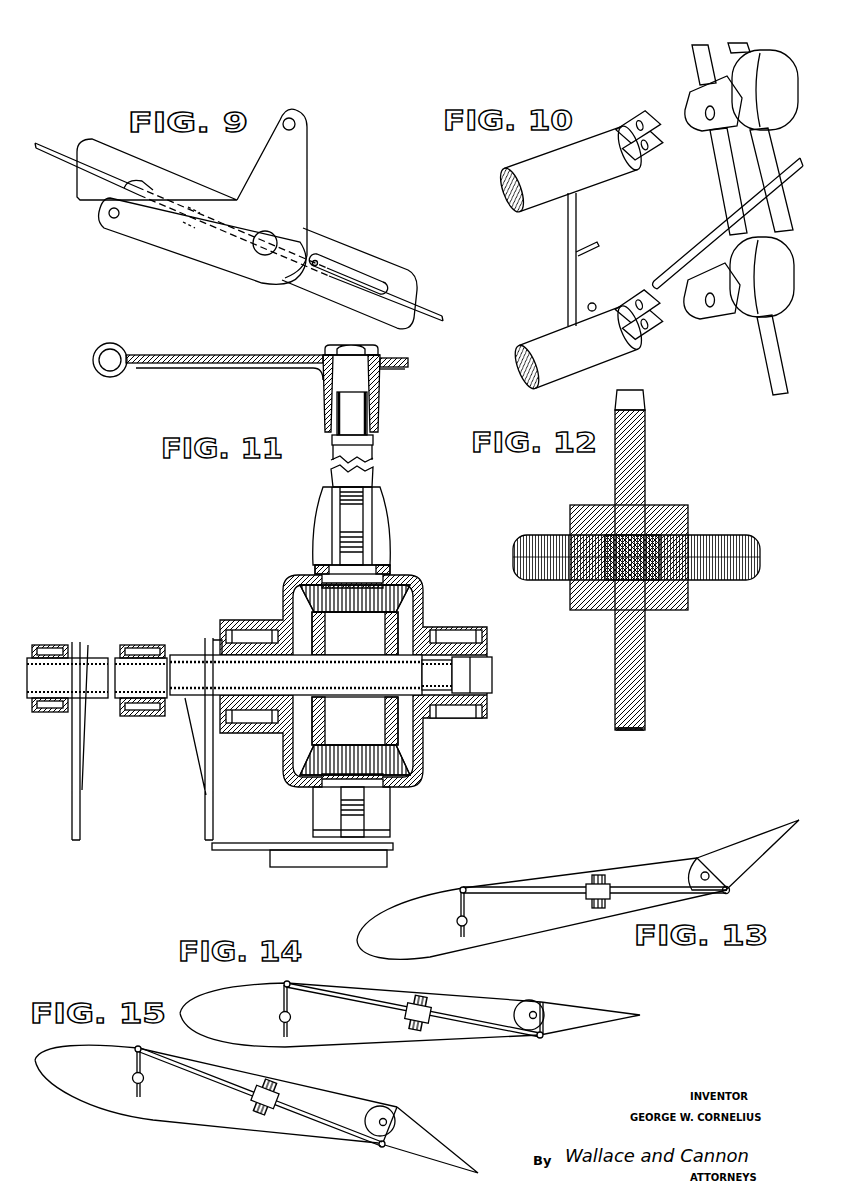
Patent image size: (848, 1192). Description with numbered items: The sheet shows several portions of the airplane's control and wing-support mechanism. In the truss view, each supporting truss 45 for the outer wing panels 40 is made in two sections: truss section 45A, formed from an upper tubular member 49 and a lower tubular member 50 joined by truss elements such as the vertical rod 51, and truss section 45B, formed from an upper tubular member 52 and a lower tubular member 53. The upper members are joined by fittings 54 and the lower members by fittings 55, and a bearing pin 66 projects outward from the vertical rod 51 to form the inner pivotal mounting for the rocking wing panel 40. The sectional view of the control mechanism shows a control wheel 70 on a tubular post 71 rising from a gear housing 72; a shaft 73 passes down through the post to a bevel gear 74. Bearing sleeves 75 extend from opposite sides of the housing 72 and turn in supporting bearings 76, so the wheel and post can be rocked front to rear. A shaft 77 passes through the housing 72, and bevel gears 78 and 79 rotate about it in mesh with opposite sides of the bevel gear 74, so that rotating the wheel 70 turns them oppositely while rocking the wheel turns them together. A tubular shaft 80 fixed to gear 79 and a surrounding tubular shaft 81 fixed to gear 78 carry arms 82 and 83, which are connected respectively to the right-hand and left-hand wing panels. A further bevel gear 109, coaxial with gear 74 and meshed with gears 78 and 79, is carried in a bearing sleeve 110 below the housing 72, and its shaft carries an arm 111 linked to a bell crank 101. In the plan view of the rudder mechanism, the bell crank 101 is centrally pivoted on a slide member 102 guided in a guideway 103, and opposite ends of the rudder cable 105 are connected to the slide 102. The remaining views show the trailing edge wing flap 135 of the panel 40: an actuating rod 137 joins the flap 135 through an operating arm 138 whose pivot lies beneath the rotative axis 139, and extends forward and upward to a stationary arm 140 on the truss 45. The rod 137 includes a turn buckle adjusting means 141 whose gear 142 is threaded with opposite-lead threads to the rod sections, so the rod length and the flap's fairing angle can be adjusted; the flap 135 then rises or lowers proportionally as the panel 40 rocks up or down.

In FIG. 13, the outer wing panel 40 is at (537, 932).
In FIG. 10, the truss 45 is at (593, 380).
In FIG. 10, the truss section 45A is at (518, 154).
In FIG. 10, the truss section 45B is at (746, 332).
In FIG. 10, the upper tubular member 49 is at (547, 208).
In FIG. 10, the lower tubular member 50 is at (610, 356).
In FIG. 10, the vertical rod 51 is at (568, 290).
In FIG. 10, the upper tubular member 52 is at (782, 58).
In FIG. 10, the lower tubular member 53 is at (784, 290).
In FIG. 10, the fittings 54 is at (665, 135).
In FIG. 10, the fittings 55 is at (663, 318).
In FIG. 10, the bearing pin 66 is at (590, 245).
In FIG. 11, the control wheel 70 is at (196, 368).
In FIG. 11, the tubular post 71 is at (363, 477).
In FIG. 11, the gear housing 72 is at (292, 583).
In FIG. 11, the shaft 73 is at (348, 433).
In FIG. 11, the bevel gear 74 is at (338, 614).
In FIG. 11, the bearing sleeves 75 is at (253, 672).
In FIG. 11, the supporting bearings 76 is at (233, 733).
In FIG. 11, the shaft 77 is at (338, 677).
In FIG. 11, the bevel gear 78 is at (288, 753).
In FIG. 11, the bevel gear 79 is at (410, 752).
In FIG. 11, the tubular shaft 80 is at (354, 693).
In FIG. 11, the tubular shaft 81 is at (195, 700).
In FIG. 11, the arm 82 is at (45, 645).
In FIG. 11, the arm 83 is at (132, 645).
In FIG. 9, the bell crank 101 is at (194, 252).
In FIG. 9, the slide member 102 is at (310, 258).
In FIG. 9, the guideway 103 is at (370, 265).
In FIG. 9, the rudder cable 105 is at (52, 157).
In FIG. 11, the bevel gear 109 is at (340, 743).
In FIG. 11, the bearing sleeve 110 is at (382, 818).
In FIG. 11, the arm 111 is at (312, 858).
In FIG. 13, the trailing edge wing flap 135 is at (751, 845).
In FIG. 14, the trailing edge wing flap 135 is at (565, 1021).
In FIG. 15, the trailing edge wing flap 135 is at (425, 1137).
In FIG. 12, the actuating rod 137 is at (548, 535).
In FIG. 14, the actuating rod 137 is at (463, 1026).
In FIG. 14, the operating arm 138 is at (552, 1020).
In FIG. 14, the rotative axis 139 is at (527, 1006).
In FIG. 14, the stationary arm 140 is at (291, 1005).
In FIG. 12, the turn buckle adjusting means 141 is at (658, 670).
In FIG. 14, the turn buckle adjusting means 141 is at (418, 1041).
In FIG. 12, the gear 142 is at (645, 633).